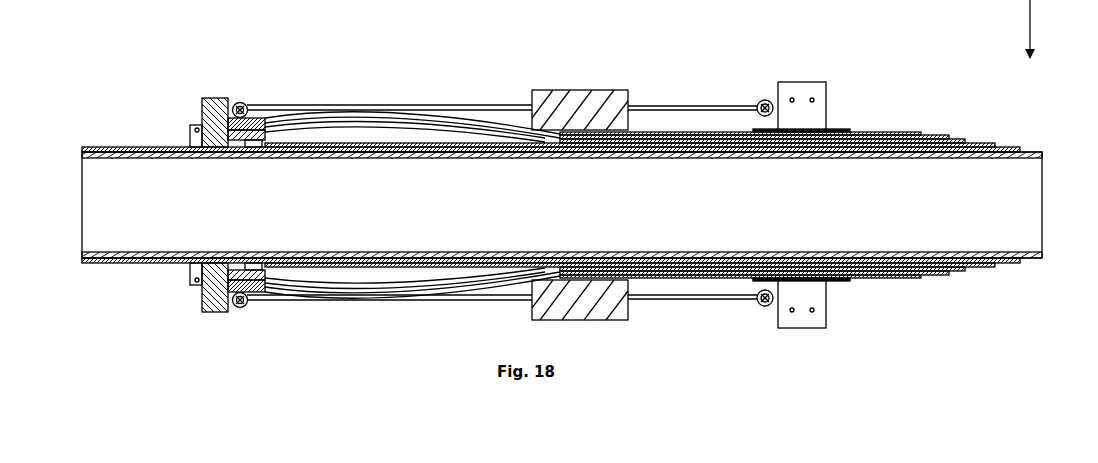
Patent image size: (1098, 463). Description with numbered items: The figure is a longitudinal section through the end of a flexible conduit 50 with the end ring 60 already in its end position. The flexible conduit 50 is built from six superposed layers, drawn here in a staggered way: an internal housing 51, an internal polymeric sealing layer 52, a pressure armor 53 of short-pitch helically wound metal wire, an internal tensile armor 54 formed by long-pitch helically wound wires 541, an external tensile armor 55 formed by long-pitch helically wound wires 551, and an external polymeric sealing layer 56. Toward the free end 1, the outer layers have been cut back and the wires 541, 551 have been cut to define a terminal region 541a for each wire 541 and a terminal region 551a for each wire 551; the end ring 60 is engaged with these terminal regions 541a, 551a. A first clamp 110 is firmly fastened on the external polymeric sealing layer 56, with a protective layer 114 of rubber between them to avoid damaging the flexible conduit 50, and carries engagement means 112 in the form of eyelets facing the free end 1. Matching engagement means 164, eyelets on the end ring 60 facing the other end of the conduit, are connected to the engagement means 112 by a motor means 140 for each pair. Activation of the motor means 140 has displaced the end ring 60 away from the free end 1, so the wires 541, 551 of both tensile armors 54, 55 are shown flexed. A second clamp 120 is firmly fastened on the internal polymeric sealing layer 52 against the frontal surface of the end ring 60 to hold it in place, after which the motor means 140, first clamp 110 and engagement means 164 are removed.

The free end 1 is at (90, 134).
The flexible conduit 50 is at (929, 303).
The internal housing 51 is at (1030, 152).
The internal polymeric sealing layer 52 is at (1010, 149).
The pressure armor 53 is at (985, 146).
The internal tensile armor 54 is at (958, 143).
The external tensile armor 55 is at (938, 140).
The external polymeric sealing layer 56 is at (912, 133).
The end ring 60 is at (206, 97).
The first clamp 110 is at (804, 82).
The engagement means 112 is at (767, 100).
The protective layer 114 is at (836, 129).
The second clamp 120 is at (188, 127).
The motor means 140 is at (583, 90).
The engagement means 164 is at (236, 104).
The wires 541 is at (364, 118).
The terminal region 541a is at (255, 130).
The wires 551 is at (425, 122).
The terminal region 551a is at (258, 137).